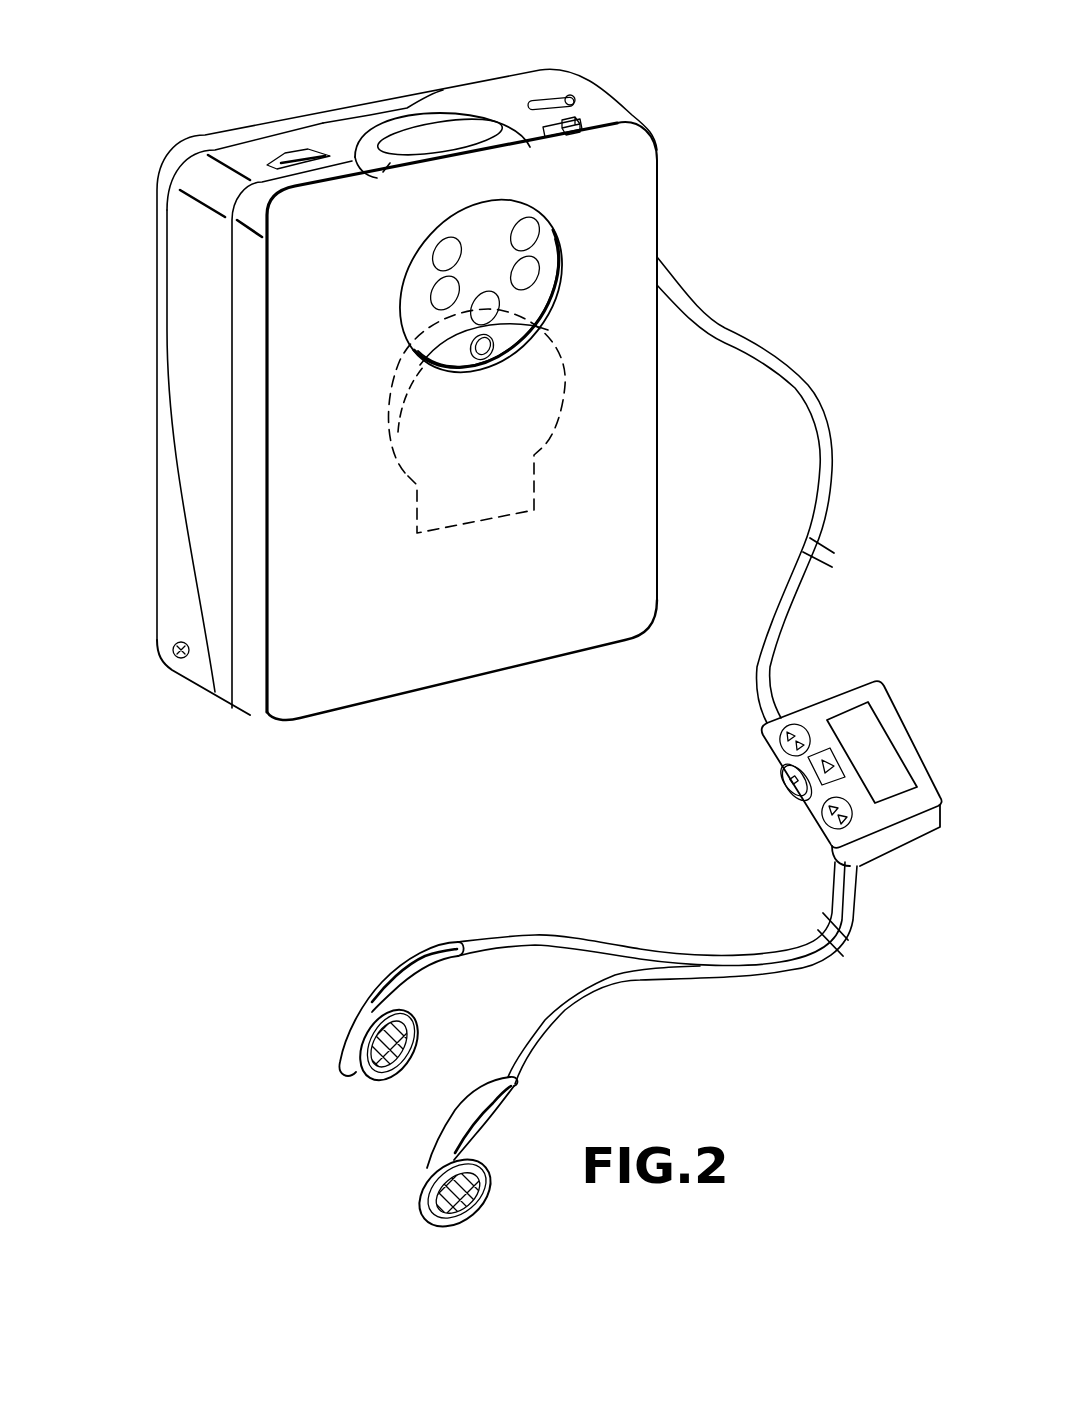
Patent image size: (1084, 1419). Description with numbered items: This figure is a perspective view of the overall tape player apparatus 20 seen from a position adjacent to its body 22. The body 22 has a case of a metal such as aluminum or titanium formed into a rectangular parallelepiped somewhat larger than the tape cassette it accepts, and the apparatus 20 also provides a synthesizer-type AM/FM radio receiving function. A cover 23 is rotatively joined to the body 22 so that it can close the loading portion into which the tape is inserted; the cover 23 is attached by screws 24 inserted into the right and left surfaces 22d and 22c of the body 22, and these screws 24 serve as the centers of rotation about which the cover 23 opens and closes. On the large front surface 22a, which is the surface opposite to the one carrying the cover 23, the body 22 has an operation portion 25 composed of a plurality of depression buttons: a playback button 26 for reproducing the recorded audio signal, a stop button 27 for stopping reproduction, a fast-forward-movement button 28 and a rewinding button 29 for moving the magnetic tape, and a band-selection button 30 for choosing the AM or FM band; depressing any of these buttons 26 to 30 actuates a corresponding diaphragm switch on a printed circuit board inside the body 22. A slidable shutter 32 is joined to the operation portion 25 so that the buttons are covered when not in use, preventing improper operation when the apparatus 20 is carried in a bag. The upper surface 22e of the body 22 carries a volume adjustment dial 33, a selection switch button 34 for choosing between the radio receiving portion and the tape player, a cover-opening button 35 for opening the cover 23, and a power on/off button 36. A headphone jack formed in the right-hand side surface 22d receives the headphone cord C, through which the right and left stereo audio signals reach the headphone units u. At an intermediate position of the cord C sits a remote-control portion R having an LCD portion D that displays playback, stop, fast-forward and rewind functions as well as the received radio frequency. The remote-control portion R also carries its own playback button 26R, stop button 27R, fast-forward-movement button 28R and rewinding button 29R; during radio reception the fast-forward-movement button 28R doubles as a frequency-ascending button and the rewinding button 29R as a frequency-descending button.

The tape player apparatus 20 is at (146, 270).
The body 22 is at (253, 693).
The front surface of housing 22a is at (487, 640).
The left surface 22c is at (212, 517).
The right surface 22d is at (660, 523).
The upper surface 22e is at (495, 100).
The cover 23 is at (158, 422).
The screws 24 is at (180, 660).
The operation portion 25 is at (487, 199).
The playback button 26 is at (440, 252).
The stop button 27 is at (527, 233).
The fast-forward-movement button 28 is at (435, 297).
The rewinding button 29 is at (530, 276).
The band-selection button 30 is at (488, 307).
The slidable shutter 32 is at (481, 350).
The volume adjustment dial 33 is at (297, 148).
The selection switch button 34 is at (567, 97).
The cover-opening button 35 is at (412, 142).
The power on/off button 36 is at (577, 120).
The headphone cord C is at (819, 418).
The LCD portion D is at (853, 722).
The remote-control portion R is at (908, 911).
The playback button 26R is at (820, 787).
The stop button 27R is at (787, 787).
The fast-forward-movement button 28R is at (777, 743).
The rewinding button 29R is at (827, 823).
The earphones u is at (420, 1200).